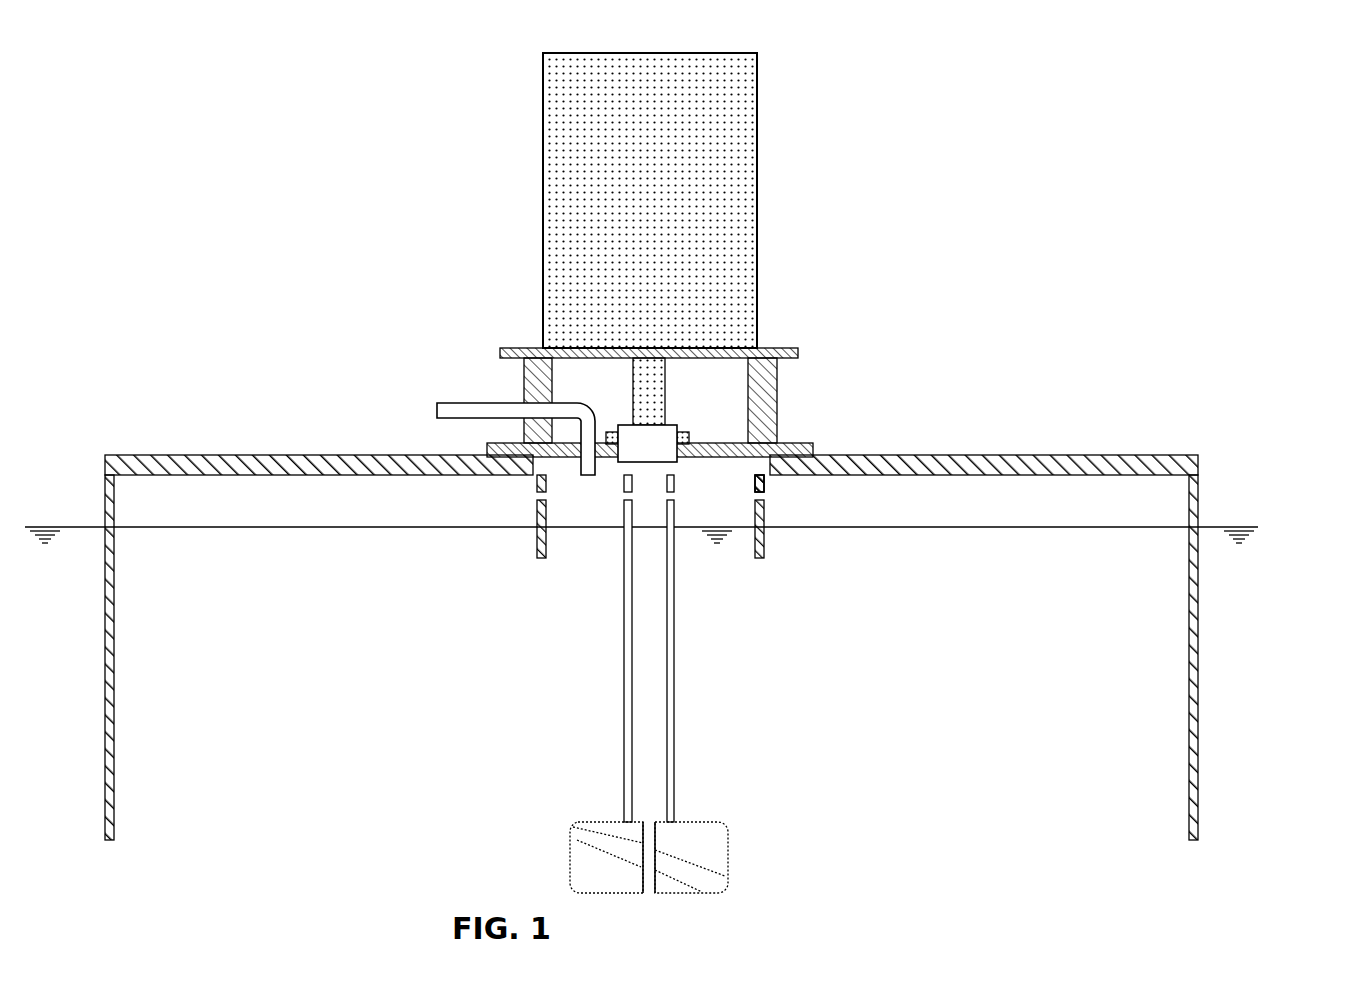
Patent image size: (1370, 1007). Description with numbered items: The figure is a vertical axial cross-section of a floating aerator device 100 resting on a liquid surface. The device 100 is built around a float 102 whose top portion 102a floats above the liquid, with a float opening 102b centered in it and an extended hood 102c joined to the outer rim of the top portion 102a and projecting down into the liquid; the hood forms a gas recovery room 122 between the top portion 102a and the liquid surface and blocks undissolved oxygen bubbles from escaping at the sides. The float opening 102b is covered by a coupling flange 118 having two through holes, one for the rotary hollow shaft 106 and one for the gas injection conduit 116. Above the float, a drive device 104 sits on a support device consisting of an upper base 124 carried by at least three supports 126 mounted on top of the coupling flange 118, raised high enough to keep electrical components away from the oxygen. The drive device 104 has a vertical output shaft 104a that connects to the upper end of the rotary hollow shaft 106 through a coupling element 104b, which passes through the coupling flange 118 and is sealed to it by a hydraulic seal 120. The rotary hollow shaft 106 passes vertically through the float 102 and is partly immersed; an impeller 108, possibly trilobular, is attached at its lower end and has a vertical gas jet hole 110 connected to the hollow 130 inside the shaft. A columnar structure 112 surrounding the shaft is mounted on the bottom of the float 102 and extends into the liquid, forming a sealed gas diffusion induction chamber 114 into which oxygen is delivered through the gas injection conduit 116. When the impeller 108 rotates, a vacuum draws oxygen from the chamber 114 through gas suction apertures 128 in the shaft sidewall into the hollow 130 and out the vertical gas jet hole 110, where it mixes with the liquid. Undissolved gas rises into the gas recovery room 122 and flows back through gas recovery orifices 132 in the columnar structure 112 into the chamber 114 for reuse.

The device 100 is at (482, 102).
The float 102 is at (696, 624).
The top portion 102a is at (1110, 455).
The float opening 102b is at (765, 480).
The extended hood 102c is at (1198, 722).
The drive device 104 is at (757, 212).
The vertical output shaft 104a is at (633, 393).
The coupling element 104b is at (647, 443).
The rotary hollow shaft 106 is at (690, 646).
The impeller 108 is at (702, 820).
The vertical gas jet hole 110 is at (652, 895).
The columnar structure 112 is at (765, 548).
The gas diffusion induction chamber 114 is at (593, 515).
The gas injection conduit 116 is at (483, 403).
The coupling flange 118 is at (813, 447).
The hydraulic seal 120 is at (683, 427).
The gas recovery room 122 is at (687, 517).
The upper base 124 is at (798, 352).
The supports 126 is at (777, 402).
The gas suction apertures 128 is at (670, 495).
The hollow 130 is at (647, 648).
The gas recovery orifices 132 is at (765, 495).